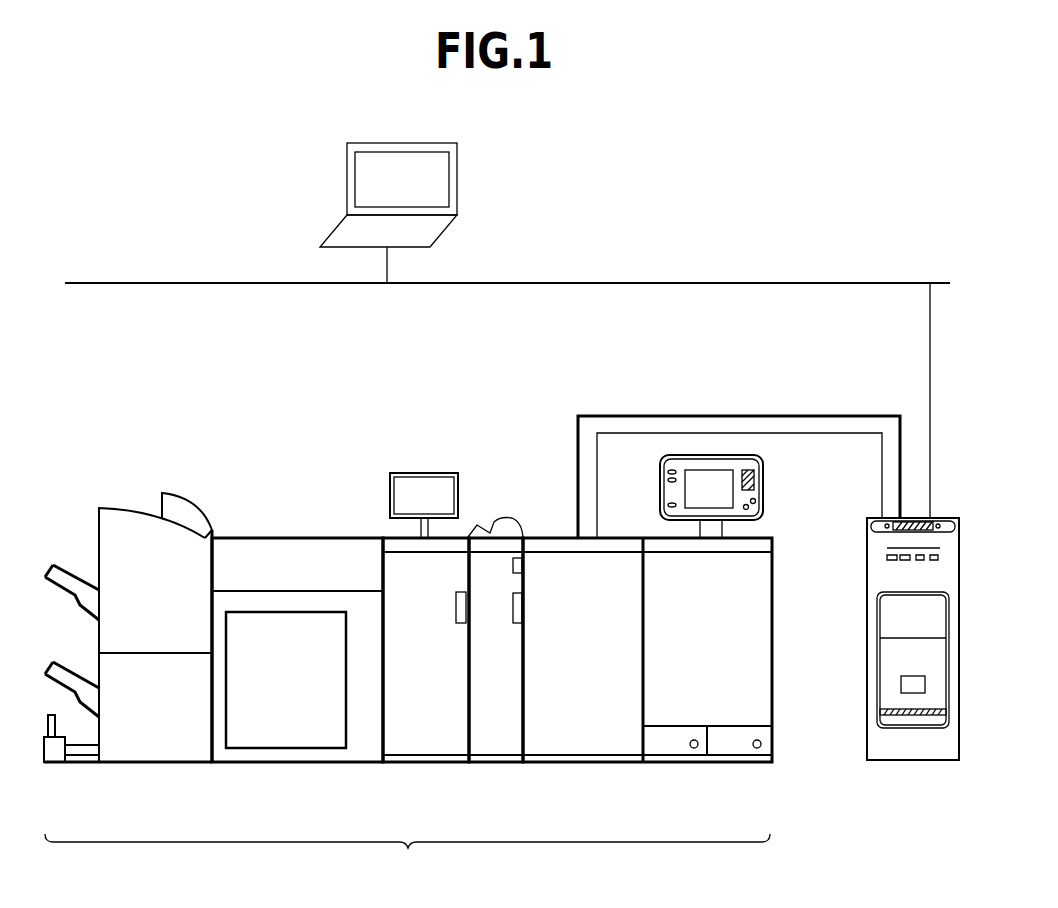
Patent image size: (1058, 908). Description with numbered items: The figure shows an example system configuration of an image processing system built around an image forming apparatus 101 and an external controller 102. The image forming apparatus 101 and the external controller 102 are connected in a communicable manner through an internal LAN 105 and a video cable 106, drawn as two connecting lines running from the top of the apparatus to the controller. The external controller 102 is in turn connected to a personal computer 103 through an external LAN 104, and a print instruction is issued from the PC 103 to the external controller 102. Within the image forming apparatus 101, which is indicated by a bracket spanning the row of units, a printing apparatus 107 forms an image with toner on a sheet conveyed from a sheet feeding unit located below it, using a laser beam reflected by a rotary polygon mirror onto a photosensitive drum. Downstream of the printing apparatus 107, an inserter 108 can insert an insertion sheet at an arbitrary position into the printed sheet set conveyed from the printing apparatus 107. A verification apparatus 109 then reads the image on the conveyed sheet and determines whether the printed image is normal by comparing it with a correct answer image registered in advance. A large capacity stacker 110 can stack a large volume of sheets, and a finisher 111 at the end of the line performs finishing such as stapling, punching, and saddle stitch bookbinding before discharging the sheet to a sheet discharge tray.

The image forming apparatus 101 is at (407, 858).
The external controller 102 is at (917, 762).
The personal computer (PC) 103 is at (347, 178).
The external LAN 104 is at (765, 283).
The internal LAN 105 is at (815, 436).
The video cable 106 is at (788, 416).
The printing apparatus 107 is at (672, 765).
The inserter 108 is at (497, 765).
The verification apparatus 109 is at (420, 765).
The large capacity stacker 110 is at (298, 765).
The finisher 111 is at (153, 765).